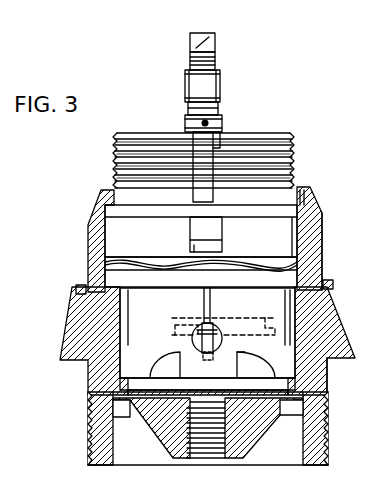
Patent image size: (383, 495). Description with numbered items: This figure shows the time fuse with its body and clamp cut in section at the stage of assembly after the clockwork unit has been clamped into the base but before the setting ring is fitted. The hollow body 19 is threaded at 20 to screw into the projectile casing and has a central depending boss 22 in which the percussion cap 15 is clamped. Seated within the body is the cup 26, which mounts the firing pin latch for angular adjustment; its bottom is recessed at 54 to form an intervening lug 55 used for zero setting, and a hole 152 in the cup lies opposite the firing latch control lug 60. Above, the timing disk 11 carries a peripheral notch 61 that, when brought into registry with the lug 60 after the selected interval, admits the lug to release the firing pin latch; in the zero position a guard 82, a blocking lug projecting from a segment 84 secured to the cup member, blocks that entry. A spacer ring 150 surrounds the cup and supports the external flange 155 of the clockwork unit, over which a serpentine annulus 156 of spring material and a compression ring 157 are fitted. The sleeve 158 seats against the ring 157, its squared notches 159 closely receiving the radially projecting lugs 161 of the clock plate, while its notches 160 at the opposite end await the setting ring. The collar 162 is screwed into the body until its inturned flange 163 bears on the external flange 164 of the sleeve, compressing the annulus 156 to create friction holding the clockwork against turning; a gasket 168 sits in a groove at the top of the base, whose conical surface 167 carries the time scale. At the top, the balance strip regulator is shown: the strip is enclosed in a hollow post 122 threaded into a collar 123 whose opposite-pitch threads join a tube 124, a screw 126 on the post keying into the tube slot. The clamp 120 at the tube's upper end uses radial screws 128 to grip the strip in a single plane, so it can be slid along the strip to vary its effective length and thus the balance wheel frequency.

The clamp 120 is at (222, 48).
The screws 128 is at (190, 41).
The tube 124 is at (210, 62).
The collar 123 is at (222, 90).
The hollow post 122 is at (188, 108).
The screw 126 is at (190, 120).
The squared notches 160 is at (221, 127).
The external flange 164 is at (117, 178).
The inturned flange 163 is at (307, 192).
The collar 162 is at (323, 237).
The sleeve 158 is at (112, 212).
The compression ring 157 is at (266, 256).
The squared radially projecting lugs 161 is at (222, 236).
The squared notches 159 is at (194, 249).
The serpentine annulus 156 is at (236, 265).
The external flange 155 is at (112, 284).
The conical surface 167 is at (64, 328).
The spacer ring 150 is at (76, 291).
The gasket 168 is at (330, 283).
The cup 26 is at (325, 374).
The hole 152 is at (203, 324).
The lug 60 is at (206, 322).
The guard 82 is at (213, 326).
The segment 84 is at (238, 318).
The timing disk 11 is at (272, 318).
The notch 61 is at (203, 357).
The recess 54 is at (158, 366).
The lug 55 is at (232, 368).
The body 19 is at (86, 426).
The threads 20 is at (86, 440).
The boss 22 is at (158, 430).
The percussion cap 15 is at (222, 412).